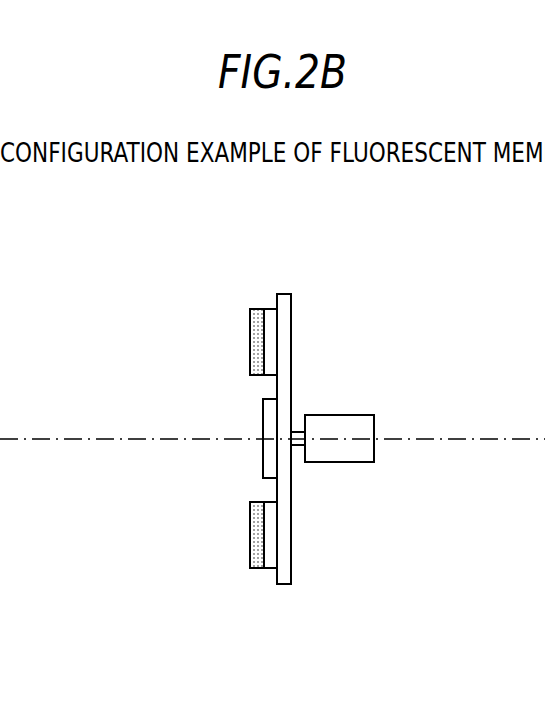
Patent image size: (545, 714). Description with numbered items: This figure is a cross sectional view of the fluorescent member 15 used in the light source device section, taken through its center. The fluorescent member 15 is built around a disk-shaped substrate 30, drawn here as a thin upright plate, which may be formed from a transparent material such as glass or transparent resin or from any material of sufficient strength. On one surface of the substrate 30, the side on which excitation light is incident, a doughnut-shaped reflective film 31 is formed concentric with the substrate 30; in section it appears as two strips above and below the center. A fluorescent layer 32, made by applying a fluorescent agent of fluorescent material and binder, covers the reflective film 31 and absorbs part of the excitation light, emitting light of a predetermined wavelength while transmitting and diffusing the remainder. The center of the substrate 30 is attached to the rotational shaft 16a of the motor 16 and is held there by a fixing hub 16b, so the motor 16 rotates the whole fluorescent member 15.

The fluorescent member 15 is at (316, 287).
The substrate 30 is at (283, 298).
The reflective film 31 is at (268, 562).
The fluorescent layer 32 is at (257, 569).
The motor 16 is at (333, 462).
The rotational shaft 16a is at (293, 432).
The fixing hub 16b is at (263, 455).